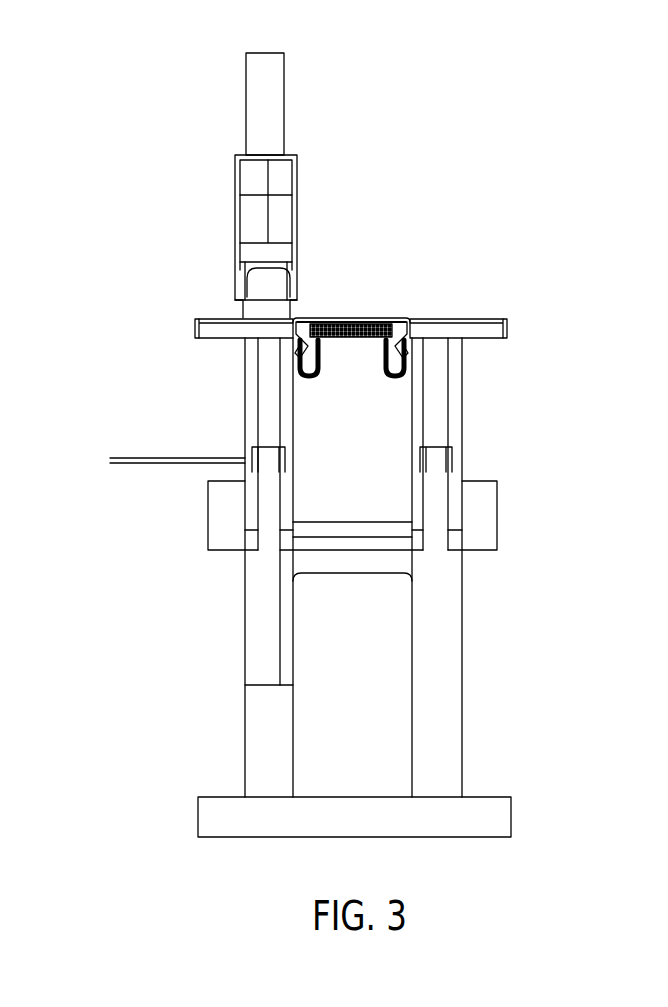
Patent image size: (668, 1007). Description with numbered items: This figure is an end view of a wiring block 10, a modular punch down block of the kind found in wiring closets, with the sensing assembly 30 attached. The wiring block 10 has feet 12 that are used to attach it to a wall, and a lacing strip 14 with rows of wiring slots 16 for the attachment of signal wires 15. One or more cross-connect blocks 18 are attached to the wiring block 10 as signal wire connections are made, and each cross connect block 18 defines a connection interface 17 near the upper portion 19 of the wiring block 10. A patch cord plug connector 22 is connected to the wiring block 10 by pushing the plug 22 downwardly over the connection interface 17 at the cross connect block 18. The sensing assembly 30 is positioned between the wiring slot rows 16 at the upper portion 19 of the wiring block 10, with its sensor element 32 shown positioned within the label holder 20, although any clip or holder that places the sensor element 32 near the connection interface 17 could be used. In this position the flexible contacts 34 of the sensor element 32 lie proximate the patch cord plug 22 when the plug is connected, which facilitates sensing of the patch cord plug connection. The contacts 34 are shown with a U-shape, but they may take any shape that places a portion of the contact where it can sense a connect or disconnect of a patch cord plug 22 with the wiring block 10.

The wiring block 10 is at (552, 365).
The feet 12 is at (486, 797).
The lacing strip 14 is at (250, 465).
The signal wires 15 is at (114, 457).
The wiring slots 16 is at (245, 430).
The connection interface 17 is at (294, 318).
The cross-connect block 18 is at (245, 398).
The upper portion 19 is at (410, 320).
The label holder 20 is at (398, 349).
The patch cord plug connector 22 is at (235, 172).
The sensing assembly 30 is at (349, 374).
The sensor element 32 is at (350, 338).
The flexible contacts 34 is at (292, 352).